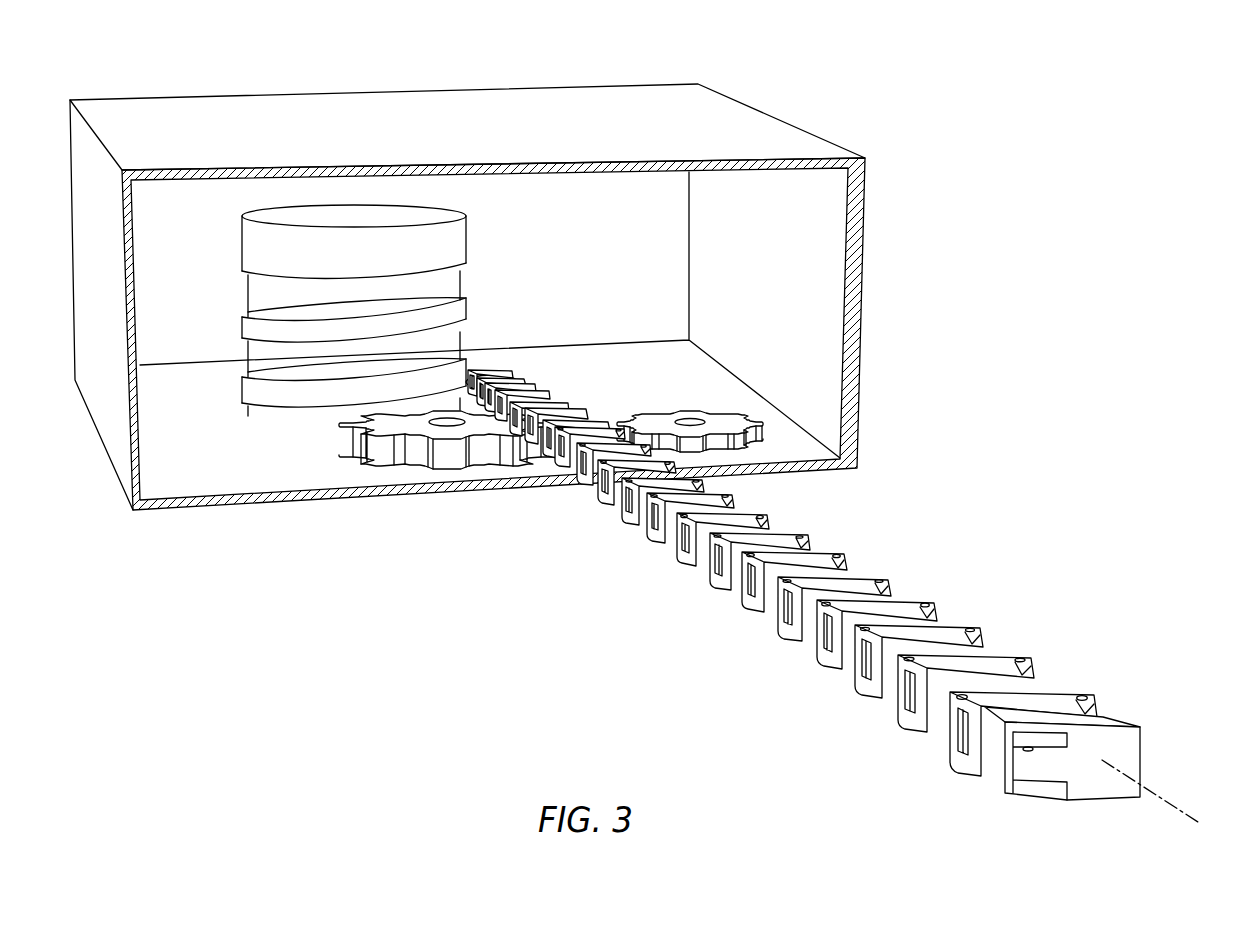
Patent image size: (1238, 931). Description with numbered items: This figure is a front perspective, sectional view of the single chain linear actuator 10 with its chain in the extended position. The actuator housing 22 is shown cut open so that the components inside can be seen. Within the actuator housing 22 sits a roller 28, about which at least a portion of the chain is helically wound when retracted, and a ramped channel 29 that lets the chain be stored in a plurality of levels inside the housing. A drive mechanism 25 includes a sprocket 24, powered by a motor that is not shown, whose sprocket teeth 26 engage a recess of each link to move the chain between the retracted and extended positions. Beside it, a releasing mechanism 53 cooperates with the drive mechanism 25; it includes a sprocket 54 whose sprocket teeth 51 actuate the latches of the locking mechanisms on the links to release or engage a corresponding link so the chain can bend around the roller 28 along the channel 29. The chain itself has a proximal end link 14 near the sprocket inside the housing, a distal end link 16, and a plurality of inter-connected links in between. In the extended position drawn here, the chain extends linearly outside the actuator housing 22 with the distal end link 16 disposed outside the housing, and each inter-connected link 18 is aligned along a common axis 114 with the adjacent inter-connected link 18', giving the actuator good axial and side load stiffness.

The single chain linear actuator 10 is at (247, 73).
The proximal end link 14 is at (474, 368).
The distal end link 16 is at (1063, 710).
The inter-connected link 18 is at (907, 618).
The adjacent inter-connected link 18' is at (863, 588).
The actuator housing 22 is at (746, 126).
The sprocket 24 is at (393, 428).
The drive mechanism 25 is at (326, 451).
The sprocket teeth 26 is at (504, 457).
The roller 28 is at (432, 215).
The channel 29 is at (288, 293).
The sprocket teeth 51 is at (603, 420).
The releasing mechanism 53 is at (694, 407).
The sprocket 54 is at (742, 421).
The common axis 114 is at (1158, 800).